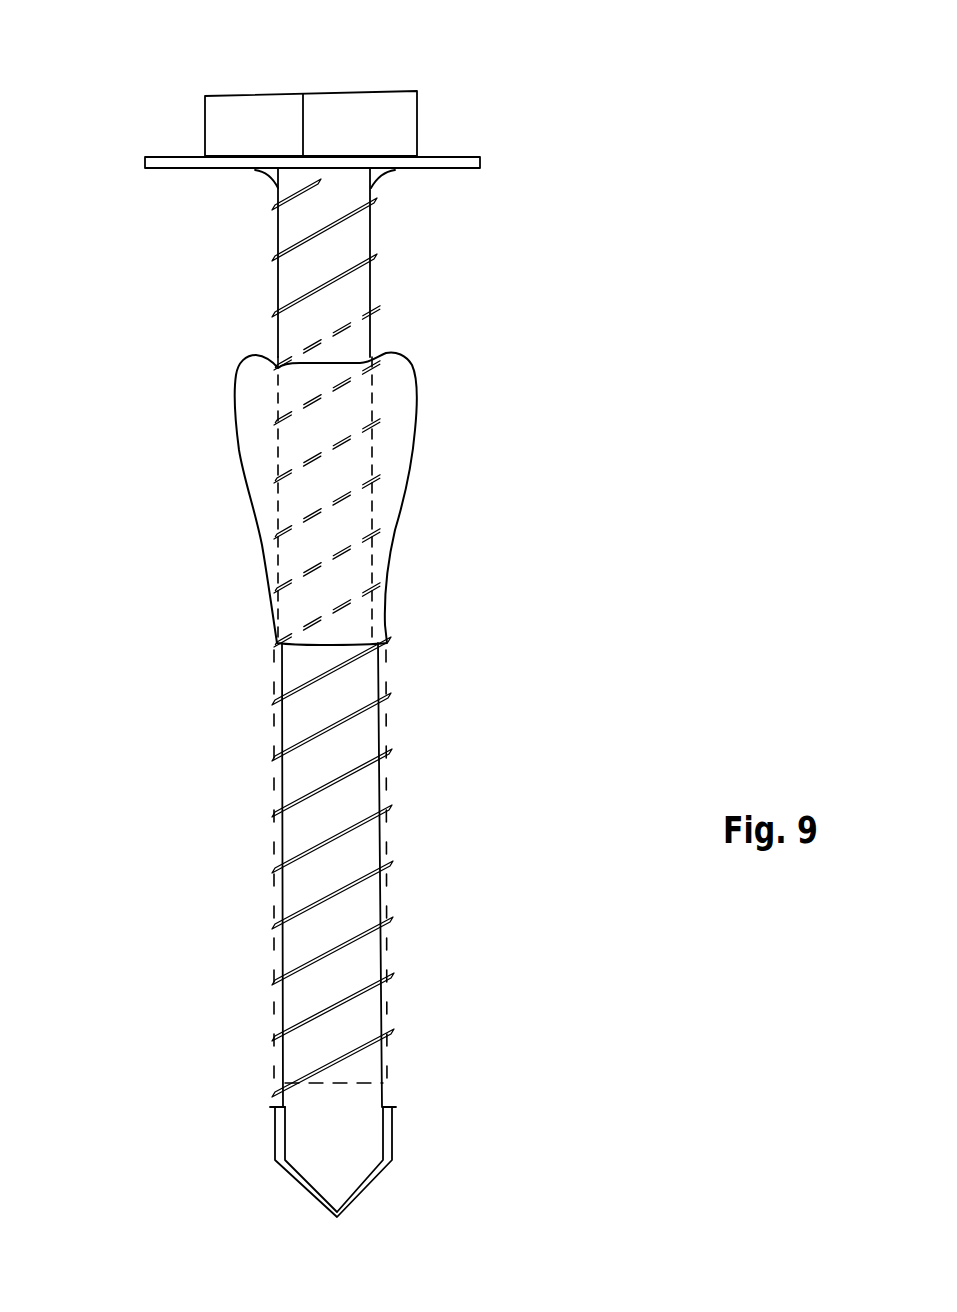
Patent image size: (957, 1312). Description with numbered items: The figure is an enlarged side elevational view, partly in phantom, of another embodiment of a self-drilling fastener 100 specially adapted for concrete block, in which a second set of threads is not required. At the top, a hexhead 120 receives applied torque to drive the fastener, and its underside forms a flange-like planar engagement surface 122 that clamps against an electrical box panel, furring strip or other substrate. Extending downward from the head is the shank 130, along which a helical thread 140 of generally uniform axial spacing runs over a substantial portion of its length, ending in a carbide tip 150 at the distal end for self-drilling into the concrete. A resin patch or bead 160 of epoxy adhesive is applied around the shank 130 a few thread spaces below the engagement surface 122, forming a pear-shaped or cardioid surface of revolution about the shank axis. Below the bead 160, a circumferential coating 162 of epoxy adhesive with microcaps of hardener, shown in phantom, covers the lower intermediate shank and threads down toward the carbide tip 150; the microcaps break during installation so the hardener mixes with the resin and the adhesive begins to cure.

The self-drilling fastener 100 is at (550, 276).
The hexhead 120 is at (232, 125).
The flange-like planar engagement surface 122 is at (176, 164).
The shank 130 is at (358, 748).
The helical thread 140 is at (372, 316).
The carbide tip 150 is at (373, 1180).
The resin patch or bead 160 is at (236, 418).
The circumferential coating 162 is at (273, 898).